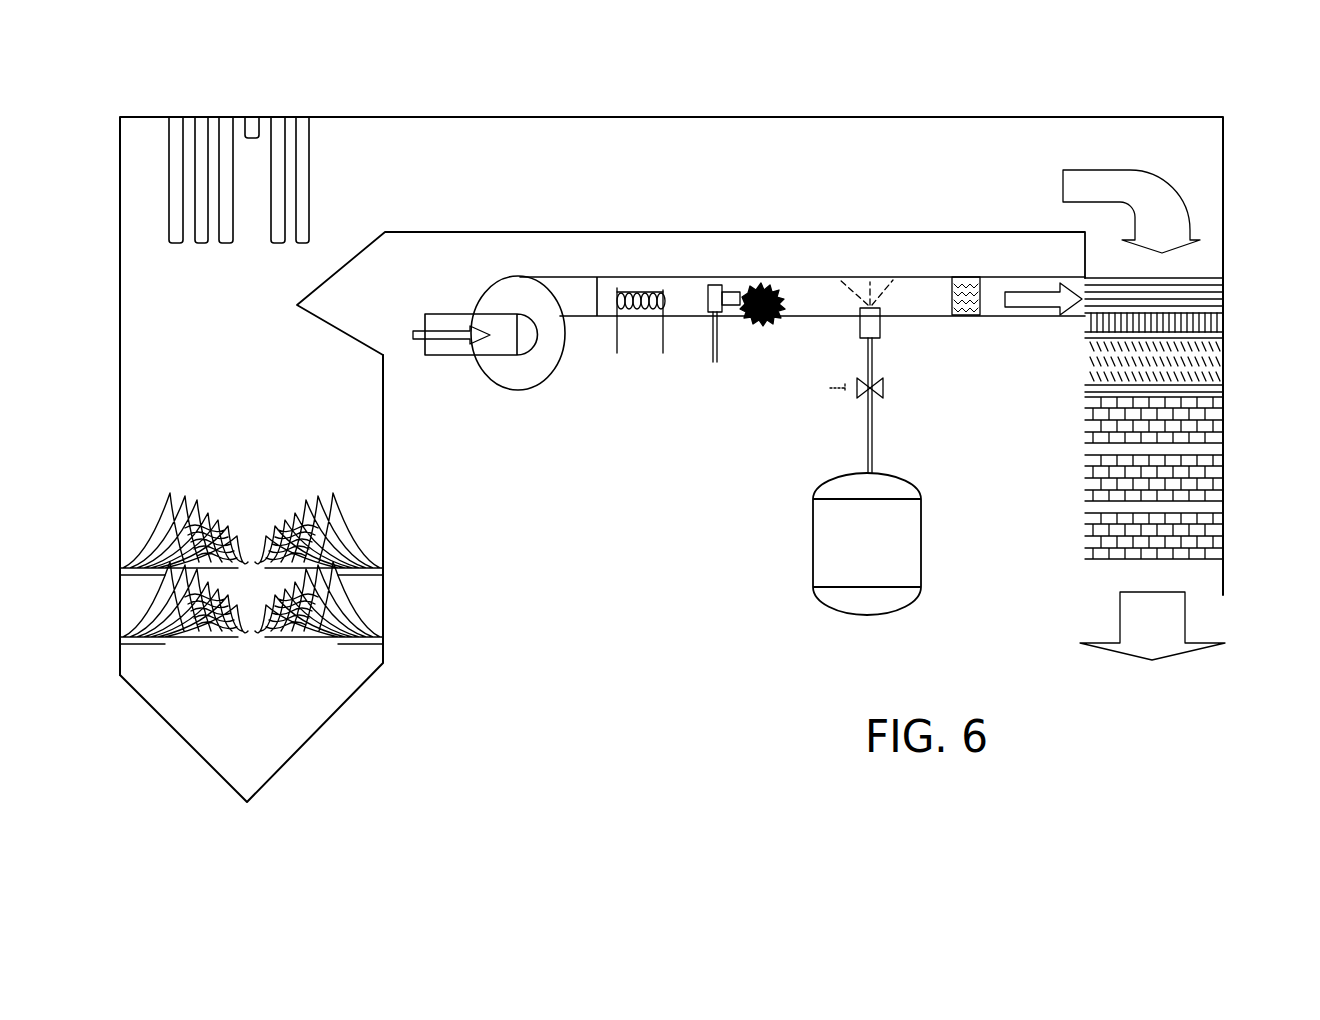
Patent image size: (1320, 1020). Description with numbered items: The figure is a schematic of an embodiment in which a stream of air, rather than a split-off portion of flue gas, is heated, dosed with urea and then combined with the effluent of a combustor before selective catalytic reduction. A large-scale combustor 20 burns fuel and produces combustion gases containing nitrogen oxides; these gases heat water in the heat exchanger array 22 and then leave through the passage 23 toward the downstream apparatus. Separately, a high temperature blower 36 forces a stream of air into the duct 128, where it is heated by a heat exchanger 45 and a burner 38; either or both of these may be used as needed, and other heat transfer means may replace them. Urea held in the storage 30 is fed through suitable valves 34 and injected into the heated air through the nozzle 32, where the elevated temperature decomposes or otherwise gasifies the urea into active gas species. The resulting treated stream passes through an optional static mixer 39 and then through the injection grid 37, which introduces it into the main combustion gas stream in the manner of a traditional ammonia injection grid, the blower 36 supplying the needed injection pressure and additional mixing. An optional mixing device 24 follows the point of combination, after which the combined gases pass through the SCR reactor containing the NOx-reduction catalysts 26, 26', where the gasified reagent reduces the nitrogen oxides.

The combustor 20 is at (266, 491).
The heat exchanger array 22 is at (291, 213).
The passage 23 is at (730, 181).
The high temperature blower 36 is at (520, 290).
The heat exchanger 45 is at (491, 359).
The duct 128 is at (618, 288).
The burner 38 is at (708, 345).
The nozzle 32 is at (880, 322).
The valves 34 is at (843, 390).
The storage 30 is at (884, 579).
The static mixer 39 is at (978, 316).
The injection grid 37 is at (1196, 313).
The mixing device 24 is at (1200, 377).
The NOx-reduction catalyst 26' is at (1113, 498).
The NOx-reduction catalyst 26 is at (1121, 559).